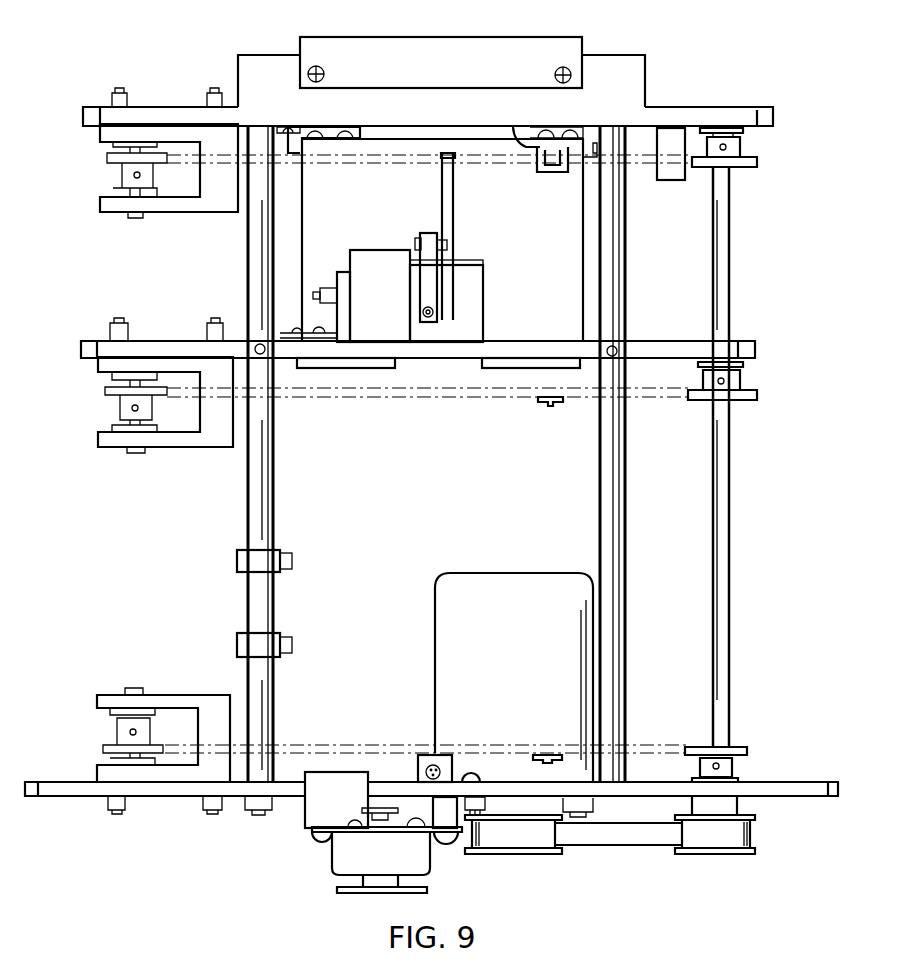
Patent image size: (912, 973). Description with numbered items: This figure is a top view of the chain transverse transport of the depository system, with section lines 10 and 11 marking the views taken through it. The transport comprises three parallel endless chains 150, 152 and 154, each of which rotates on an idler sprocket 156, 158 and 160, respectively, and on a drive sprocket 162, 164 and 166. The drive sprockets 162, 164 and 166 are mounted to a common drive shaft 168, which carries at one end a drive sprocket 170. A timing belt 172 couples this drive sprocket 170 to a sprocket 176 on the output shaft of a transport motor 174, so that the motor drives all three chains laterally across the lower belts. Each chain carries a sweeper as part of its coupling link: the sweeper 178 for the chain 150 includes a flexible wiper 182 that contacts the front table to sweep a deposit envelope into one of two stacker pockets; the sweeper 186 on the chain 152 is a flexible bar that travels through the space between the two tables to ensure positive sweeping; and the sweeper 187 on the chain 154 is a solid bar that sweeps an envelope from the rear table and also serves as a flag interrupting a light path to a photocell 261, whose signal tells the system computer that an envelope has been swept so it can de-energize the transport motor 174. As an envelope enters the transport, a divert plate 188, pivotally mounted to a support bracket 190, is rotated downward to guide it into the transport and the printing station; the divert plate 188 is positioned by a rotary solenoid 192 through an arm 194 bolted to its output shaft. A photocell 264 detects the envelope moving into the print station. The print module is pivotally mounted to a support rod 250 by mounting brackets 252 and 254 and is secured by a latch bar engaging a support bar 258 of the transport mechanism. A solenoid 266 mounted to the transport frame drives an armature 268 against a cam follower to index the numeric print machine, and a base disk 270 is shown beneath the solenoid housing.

The section line 10- 10 is at (107, 170).
The section line 11- 11 is at (619, 55).
The endless chain 150 is at (322, 163).
The endless chain 152 is at (335, 392).
The endless chain 154 is at (362, 747).
The idler sprocket 156 is at (122, 178).
The idler sprocket 158 is at (110, 392).
The idler sprocket 160 is at (108, 752).
The drive sprocket 162 is at (757, 160).
The drive sprocket 164 is at (757, 393).
The drive sprocket 166 is at (765, 741).
The drive shaft 168 is at (725, 535).
The drive sprocket 170 is at (740, 856).
The timing belt 172 is at (630, 846).
The transport motor 174 is at (485, 595).
The sprocket 176 is at (522, 852).
The sweeper 178 is at (553, 172).
The flexible wiper 182 is at (524, 146).
The sweeper 186 is at (551, 406).
The sweeper 187 is at (545, 763).
The divert plate 188 is at (527, 247).
The support bracket 190 is at (528, 350).
The rotary solenoid 192 is at (372, 262).
The arm 194 is at (437, 298).
The support rod 250 is at (276, 486).
The mounting bracket 252 is at (292, 560).
The mounting bracket 254 is at (290, 645).
The support bar 258 is at (625, 480).
The photocell 261 is at (468, 772).
The photocell 264 is at (418, 775).
The solenoid 266 is at (342, 860).
The armature 268 is at (372, 806).
The base disk 270 is at (372, 893).